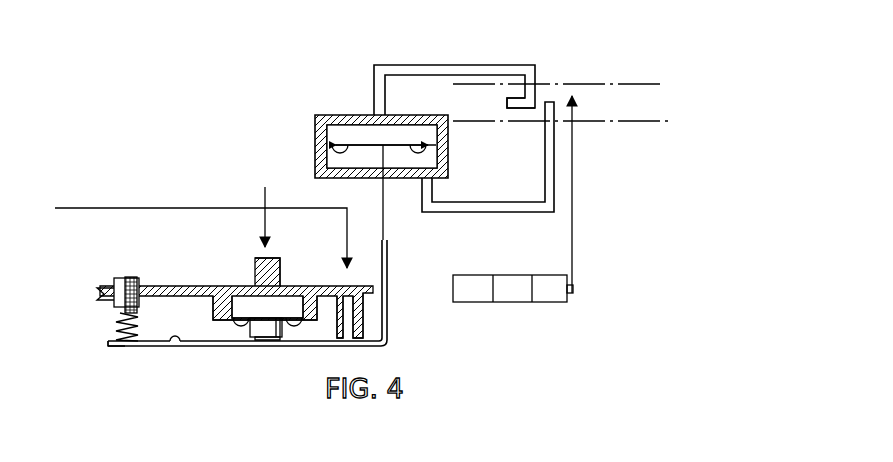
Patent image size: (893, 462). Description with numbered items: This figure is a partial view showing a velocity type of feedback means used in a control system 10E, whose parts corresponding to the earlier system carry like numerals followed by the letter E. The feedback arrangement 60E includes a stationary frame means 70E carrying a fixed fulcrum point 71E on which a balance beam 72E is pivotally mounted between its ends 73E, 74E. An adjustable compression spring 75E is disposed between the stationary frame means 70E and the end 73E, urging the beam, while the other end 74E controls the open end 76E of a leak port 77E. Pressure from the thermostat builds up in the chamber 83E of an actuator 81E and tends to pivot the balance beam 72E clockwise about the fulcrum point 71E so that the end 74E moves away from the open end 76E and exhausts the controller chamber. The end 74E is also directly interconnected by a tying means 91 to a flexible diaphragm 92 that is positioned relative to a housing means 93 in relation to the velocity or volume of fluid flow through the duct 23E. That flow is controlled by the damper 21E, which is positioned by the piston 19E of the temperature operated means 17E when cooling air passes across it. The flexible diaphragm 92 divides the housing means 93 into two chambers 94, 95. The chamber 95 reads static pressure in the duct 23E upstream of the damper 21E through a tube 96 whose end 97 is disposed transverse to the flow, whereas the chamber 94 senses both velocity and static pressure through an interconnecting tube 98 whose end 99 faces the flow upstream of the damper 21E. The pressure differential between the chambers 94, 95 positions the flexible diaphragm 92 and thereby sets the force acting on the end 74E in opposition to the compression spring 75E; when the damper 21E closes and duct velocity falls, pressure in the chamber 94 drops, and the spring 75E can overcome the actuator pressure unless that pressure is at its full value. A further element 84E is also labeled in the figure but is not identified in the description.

The control system 10E is at (644, 50).
The temperature operated means 17E is at (517, 302).
The piston 19E is at (573, 291).
The damper 21E is at (573, 95).
The duct 23E is at (628, 83).
The feedback arrangement 60E is at (150, 187).
The stationary frame means 70E is at (153, 287).
The fulcrum point 71E is at (176, 356).
The balance beam 72E is at (208, 348).
The end of beam 73E is at (113, 348).
The end of beam 74E is at (387, 250).
The compression spring 75E is at (116, 325).
The open end of leak port 76E is at (363, 332).
The leak port 77E is at (363, 307).
The actuator 81E is at (274, 305).
The chamber of actuator 83E is at (243, 302).
The actuating arrow 84E is at (266, 223).
The tying means 91 is at (383, 215).
The flexible diaphragm 92 is at (363, 145).
The housing means 93 is at (315, 132).
The chamber 94 is at (397, 130).
The chamber 95 is at (427, 157).
The tube 96 is at (546, 155).
The end of tube 97 is at (549, 102).
The interconnecting tube 98 is at (476, 65).
The end of interconnecting tube 99 is at (507, 103).